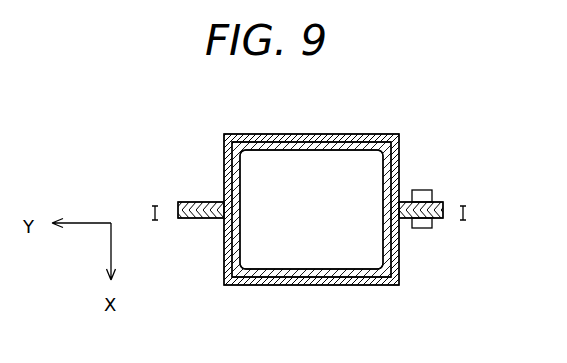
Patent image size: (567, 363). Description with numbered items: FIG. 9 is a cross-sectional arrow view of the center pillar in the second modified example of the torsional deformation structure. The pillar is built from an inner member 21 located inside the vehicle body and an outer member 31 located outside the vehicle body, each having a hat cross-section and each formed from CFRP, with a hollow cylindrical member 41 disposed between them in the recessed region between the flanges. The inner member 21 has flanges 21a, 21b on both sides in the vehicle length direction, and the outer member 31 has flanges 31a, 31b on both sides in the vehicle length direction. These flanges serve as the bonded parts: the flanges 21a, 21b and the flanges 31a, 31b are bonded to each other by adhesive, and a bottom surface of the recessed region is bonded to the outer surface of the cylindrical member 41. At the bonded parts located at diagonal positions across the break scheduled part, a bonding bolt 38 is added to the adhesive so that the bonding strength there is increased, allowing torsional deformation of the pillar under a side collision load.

The inner member 21 is at (323, 207).
The flange 21a is at (451, 212).
The flange 21b is at (178, 211).
The outer member 31 is at (374, 134).
The flange 31a is at (440, 202).
The flange 31b is at (200, 202).
The bonding bolt 38 is at (418, 228).
The cylindrical member 41 is at (396, 157).